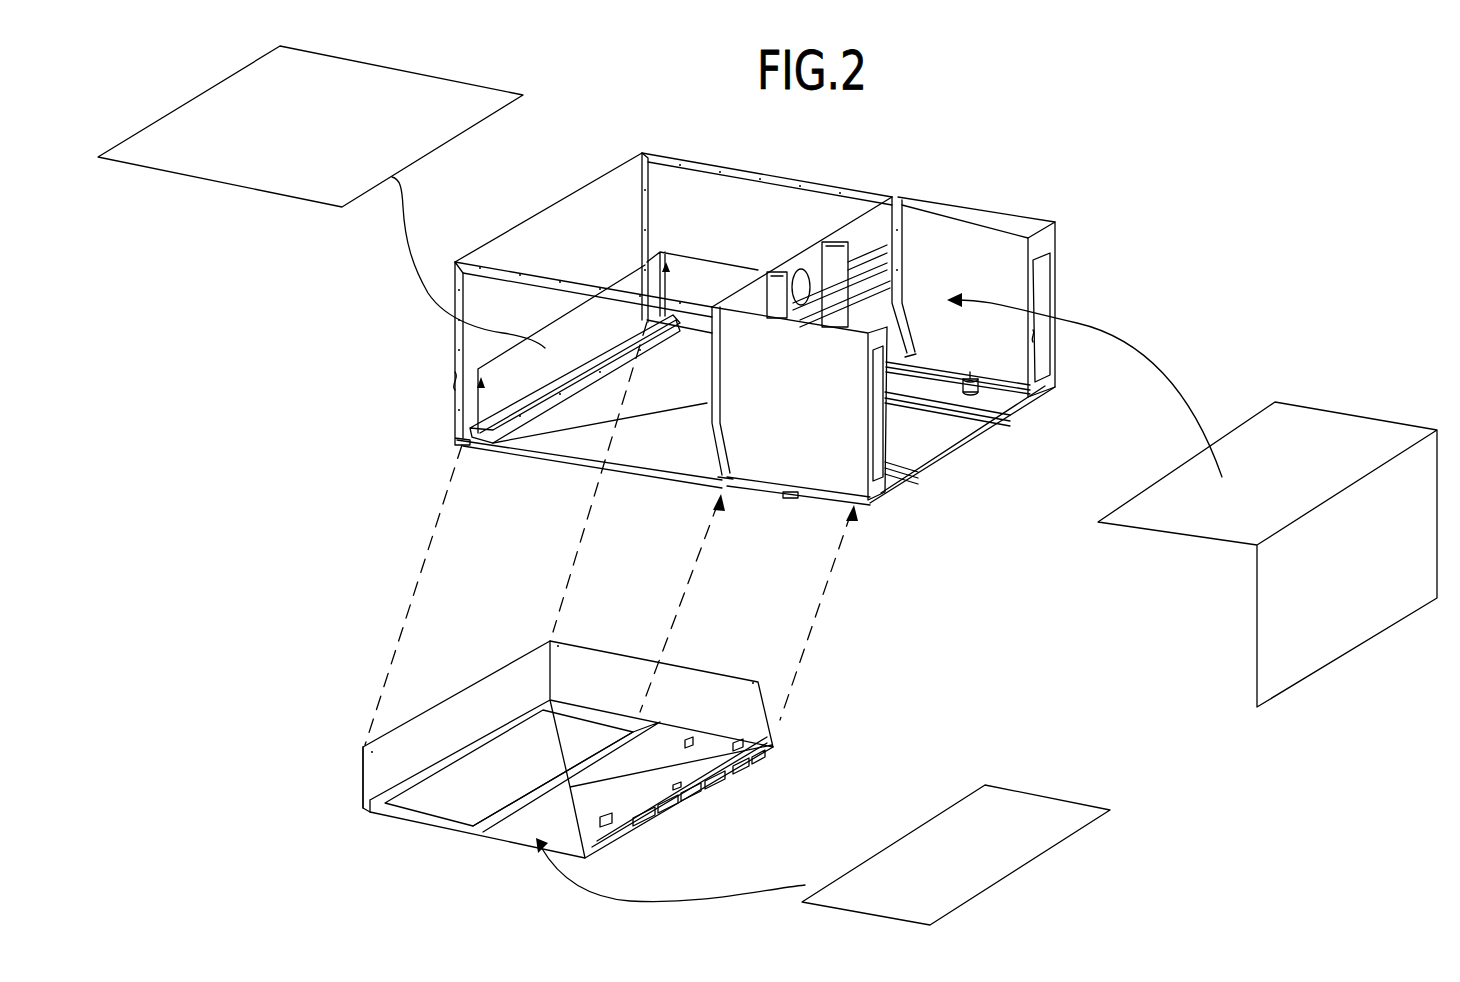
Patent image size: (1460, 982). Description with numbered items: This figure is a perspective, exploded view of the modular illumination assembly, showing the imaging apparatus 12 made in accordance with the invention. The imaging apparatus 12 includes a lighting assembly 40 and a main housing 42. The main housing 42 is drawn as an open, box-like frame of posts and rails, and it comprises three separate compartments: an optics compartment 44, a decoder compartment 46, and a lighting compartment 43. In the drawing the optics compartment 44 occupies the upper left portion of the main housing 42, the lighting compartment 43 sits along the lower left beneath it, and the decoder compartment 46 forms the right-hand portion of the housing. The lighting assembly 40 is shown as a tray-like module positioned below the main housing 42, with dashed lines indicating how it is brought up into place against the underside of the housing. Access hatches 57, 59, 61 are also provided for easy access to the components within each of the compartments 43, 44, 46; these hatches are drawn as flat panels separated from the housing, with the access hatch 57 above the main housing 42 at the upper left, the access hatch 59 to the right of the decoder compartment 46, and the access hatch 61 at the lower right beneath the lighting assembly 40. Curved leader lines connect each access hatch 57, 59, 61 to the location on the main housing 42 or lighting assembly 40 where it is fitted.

The imaging apparatus 12 is at (314, 408).
The lighting assembly 40 is at (394, 700).
The main housing 42 is at (828, 162).
The lighting compartment 43 is at (490, 392).
The optics compartment 44 is at (537, 257).
The decoder compartment 46 is at (985, 235).
The access hatch 57 is at (263, 192).
The access hatch 59 is at (1308, 675).
The access hatch 61 is at (1027, 863).